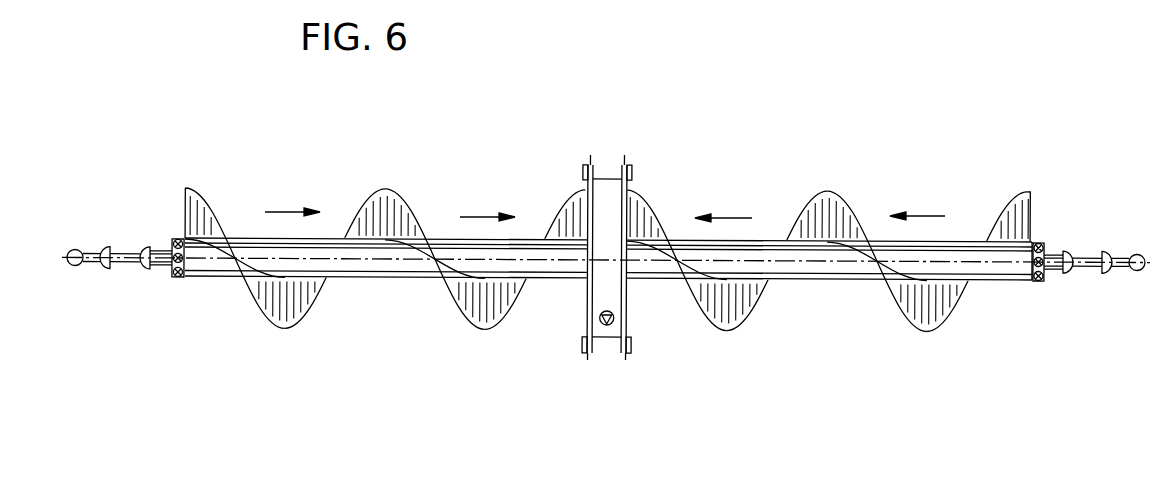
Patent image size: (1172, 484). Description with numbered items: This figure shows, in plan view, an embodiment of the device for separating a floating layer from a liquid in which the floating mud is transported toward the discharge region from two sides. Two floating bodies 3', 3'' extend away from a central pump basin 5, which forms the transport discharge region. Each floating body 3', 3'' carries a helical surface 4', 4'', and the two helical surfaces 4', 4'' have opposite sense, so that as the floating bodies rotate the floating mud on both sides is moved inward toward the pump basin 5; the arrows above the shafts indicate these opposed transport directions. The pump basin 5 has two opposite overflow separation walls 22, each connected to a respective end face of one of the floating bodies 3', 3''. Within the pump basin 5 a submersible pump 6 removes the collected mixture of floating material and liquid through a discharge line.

The floating body 3' is at (327, 185).
The floating body 3'' is at (886, 182).
The first helical screw flight 4' is at (386, 210).
The second helical screw flight 4'' is at (830, 207).
The pump basin 5 is at (607, 337).
The submersible pump 6 is at (603, 325).
The overflow separation wall 22 is at (588, 298).